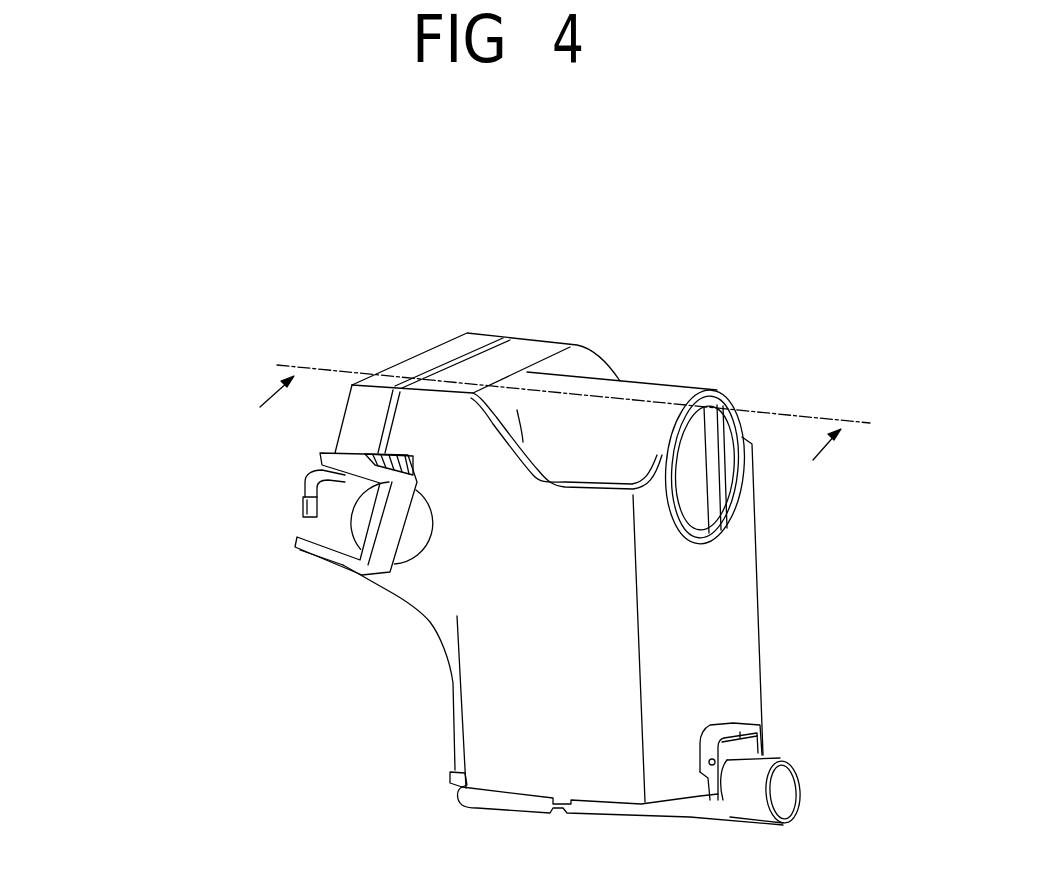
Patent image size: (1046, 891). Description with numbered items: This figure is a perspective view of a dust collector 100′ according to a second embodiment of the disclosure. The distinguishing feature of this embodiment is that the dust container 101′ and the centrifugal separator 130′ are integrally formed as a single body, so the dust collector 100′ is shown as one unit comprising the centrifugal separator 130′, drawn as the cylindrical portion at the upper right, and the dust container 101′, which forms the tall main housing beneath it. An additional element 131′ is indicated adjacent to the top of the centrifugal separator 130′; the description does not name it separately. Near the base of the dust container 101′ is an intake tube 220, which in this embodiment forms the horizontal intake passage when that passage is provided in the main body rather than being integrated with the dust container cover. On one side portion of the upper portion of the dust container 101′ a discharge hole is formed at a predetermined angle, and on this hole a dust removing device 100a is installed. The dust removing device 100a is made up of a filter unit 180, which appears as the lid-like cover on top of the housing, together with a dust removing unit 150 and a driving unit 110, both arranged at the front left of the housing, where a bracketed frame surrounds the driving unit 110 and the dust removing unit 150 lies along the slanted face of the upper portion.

The dust collector 100′ is at (817, 179).
The filter unit 180 is at (458, 348).
The handle 131′ is at (637, 378).
The centrifugal separator 130′ is at (694, 373).
The dust container 101′ is at (743, 693).
The intake tube 220 is at (802, 792).
The dust removing device 100a is at (155, 499).
The dust removing unit 150 is at (326, 423).
The driving unit 110 is at (276, 538).